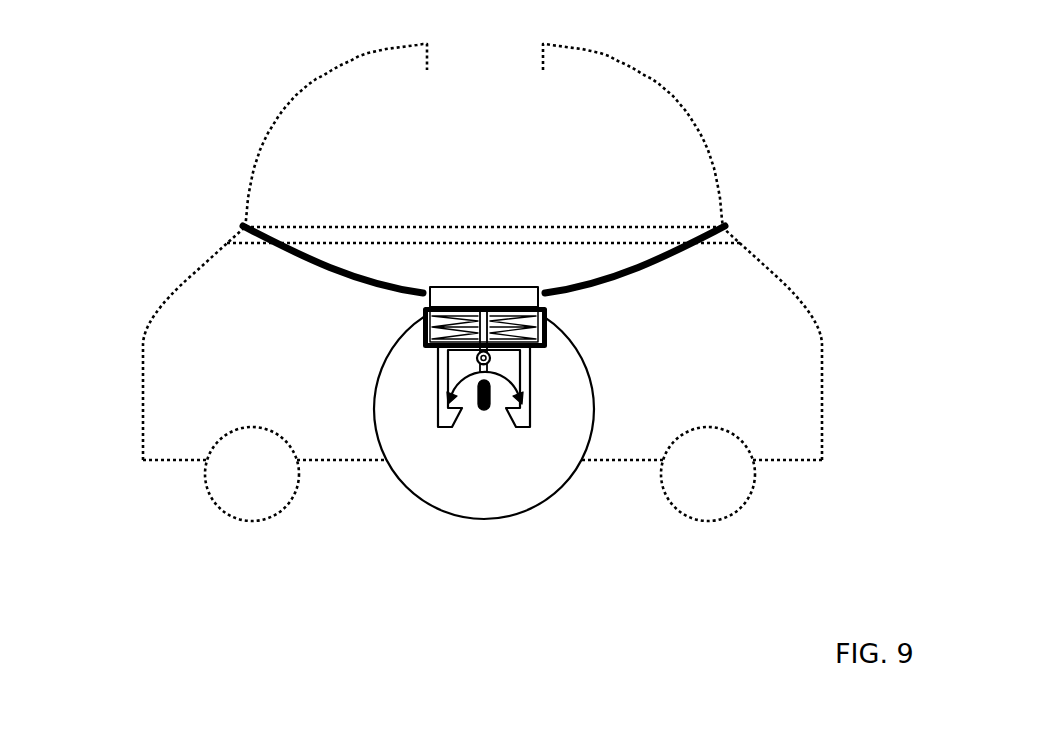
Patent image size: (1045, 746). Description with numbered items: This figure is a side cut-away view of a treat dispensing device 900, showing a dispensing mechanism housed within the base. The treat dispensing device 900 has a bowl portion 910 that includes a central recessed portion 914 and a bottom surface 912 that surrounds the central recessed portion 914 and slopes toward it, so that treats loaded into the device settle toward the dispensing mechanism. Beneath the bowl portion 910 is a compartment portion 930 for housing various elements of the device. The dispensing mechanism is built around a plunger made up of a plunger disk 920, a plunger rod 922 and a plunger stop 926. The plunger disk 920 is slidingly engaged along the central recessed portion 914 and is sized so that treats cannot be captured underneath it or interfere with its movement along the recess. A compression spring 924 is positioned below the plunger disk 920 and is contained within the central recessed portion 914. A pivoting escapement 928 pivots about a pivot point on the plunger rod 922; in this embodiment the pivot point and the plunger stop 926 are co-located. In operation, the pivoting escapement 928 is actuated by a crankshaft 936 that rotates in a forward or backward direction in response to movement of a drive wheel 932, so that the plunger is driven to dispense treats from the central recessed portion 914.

The treat dispensing device 900 is at (160, 44).
The bowl portion 910 is at (862, 213).
The bottom surface 912 is at (697, 254).
The central recessed portion 914 is at (548, 318).
The plunger disk 920 is at (503, 293).
The plunger rod 922 is at (480, 370).
The compression spring 924 is at (450, 318).
The plunger stop 926 is at (477, 357).
The pivoting escapement 928 is at (489, 364).
The compartment portion 930 is at (287, 340).
The drive wheel 932 is at (510, 518).
The crankshaft 936 is at (484, 412).